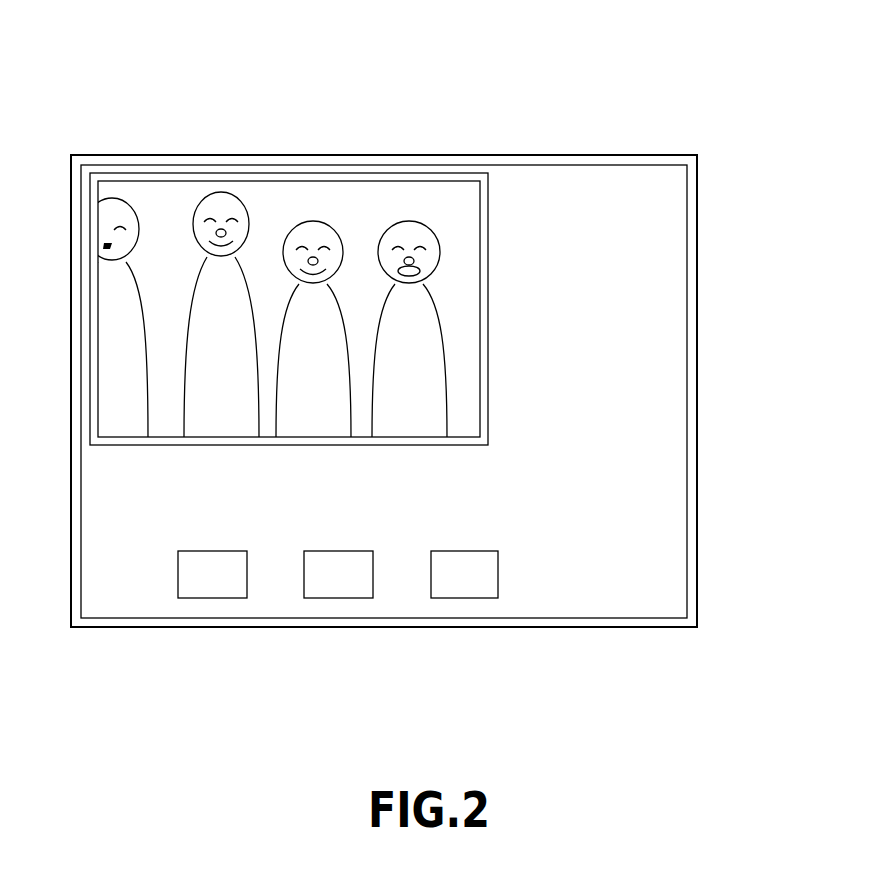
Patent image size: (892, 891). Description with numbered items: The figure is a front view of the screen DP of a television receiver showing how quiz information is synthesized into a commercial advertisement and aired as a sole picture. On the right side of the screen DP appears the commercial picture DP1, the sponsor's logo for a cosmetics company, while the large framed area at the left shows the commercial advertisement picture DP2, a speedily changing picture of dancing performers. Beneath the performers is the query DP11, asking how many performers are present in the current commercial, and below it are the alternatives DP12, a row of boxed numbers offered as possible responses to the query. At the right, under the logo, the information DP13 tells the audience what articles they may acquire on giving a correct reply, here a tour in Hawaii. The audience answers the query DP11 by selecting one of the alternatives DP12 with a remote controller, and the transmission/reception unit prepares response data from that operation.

The screen DP is at (408, 124).
The commercial picture DP1 is at (601, 182).
The commercial advertisement picture DP2 is at (293, 193).
The query DP11 is at (581, 514).
The alternative DP12 is at (523, 562).
The information on articles DP13 is at (664, 314).